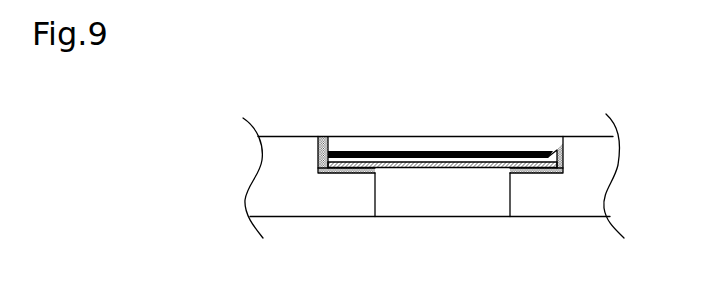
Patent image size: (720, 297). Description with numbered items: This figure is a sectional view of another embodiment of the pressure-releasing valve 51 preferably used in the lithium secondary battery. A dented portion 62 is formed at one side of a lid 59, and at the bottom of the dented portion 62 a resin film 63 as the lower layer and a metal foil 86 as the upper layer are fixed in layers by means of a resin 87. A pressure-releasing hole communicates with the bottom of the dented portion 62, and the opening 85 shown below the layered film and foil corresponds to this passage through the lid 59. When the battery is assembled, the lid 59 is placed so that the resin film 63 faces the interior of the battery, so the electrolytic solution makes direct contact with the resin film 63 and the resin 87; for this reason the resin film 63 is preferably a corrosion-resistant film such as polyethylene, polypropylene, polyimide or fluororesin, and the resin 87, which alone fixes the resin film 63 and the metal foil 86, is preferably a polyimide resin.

The pressure-releasing valve 51 is at (550, 117).
The lid 59 is at (270, 181).
The dented portion 62 is at (343, 172).
The resin film 63 is at (488, 168).
The opening 85 is at (441, 196).
The metal foil 86 is at (440, 152).
The resin 87 is at (326, 153).